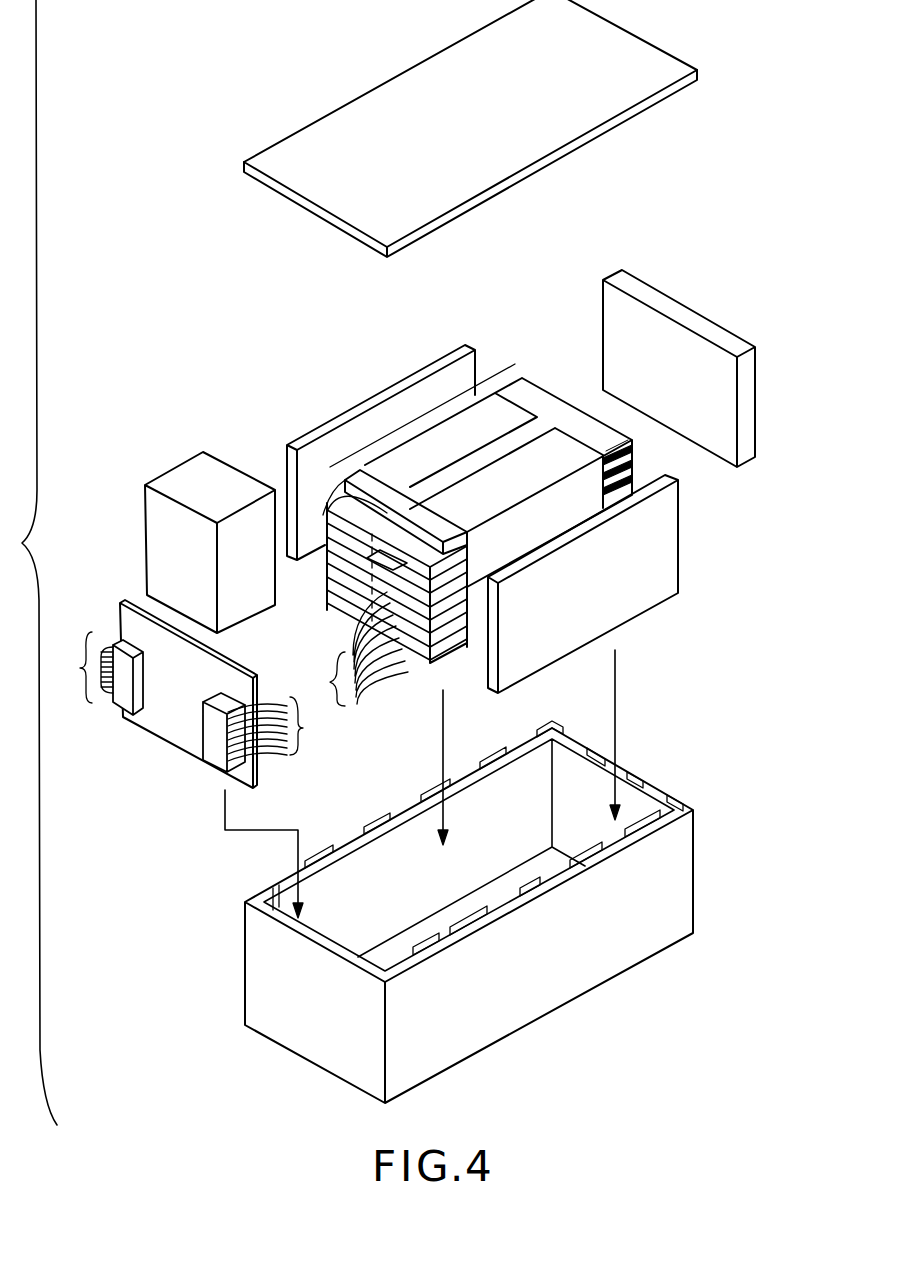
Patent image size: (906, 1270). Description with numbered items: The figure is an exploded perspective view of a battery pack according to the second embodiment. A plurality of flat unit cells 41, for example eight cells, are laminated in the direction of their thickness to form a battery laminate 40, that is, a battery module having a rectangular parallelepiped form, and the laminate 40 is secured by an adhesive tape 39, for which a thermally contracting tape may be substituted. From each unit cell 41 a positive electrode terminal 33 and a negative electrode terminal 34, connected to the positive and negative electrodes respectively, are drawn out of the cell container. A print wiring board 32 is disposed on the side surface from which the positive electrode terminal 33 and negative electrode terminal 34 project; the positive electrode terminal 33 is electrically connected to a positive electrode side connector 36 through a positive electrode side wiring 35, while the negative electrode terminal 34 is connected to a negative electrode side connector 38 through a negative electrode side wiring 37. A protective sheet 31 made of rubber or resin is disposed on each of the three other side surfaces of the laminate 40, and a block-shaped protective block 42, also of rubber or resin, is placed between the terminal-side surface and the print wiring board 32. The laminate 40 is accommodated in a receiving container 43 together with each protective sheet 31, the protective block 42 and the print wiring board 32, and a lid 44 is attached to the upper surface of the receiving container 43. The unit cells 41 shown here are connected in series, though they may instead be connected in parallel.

The protective sheet 31 is at (750, 407).
The print wiring board 32 is at (165, 728).
The positive electrode terminal 33 is at (390, 557).
The negative electrode terminal 34 is at (353, 510).
The positive electrode side wiring 35 is at (318, 676).
The positive electrode side connector 36 is at (213, 750).
The negative electrode side wiring 37 is at (287, 573).
The negative electrode side connector 38 is at (118, 697).
The adhesive tape 39 is at (553, 458).
The battery laminate 40 is at (428, 408).
The unit cell 41 is at (617, 488).
The protective block 42 is at (180, 473).
The receiving container 43 is at (683, 890).
The lid 44 is at (645, 53).